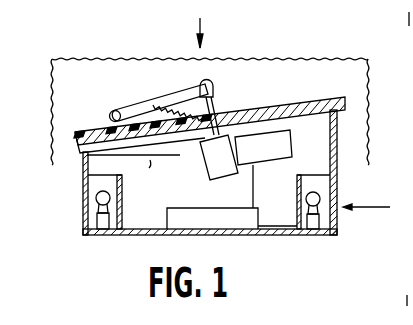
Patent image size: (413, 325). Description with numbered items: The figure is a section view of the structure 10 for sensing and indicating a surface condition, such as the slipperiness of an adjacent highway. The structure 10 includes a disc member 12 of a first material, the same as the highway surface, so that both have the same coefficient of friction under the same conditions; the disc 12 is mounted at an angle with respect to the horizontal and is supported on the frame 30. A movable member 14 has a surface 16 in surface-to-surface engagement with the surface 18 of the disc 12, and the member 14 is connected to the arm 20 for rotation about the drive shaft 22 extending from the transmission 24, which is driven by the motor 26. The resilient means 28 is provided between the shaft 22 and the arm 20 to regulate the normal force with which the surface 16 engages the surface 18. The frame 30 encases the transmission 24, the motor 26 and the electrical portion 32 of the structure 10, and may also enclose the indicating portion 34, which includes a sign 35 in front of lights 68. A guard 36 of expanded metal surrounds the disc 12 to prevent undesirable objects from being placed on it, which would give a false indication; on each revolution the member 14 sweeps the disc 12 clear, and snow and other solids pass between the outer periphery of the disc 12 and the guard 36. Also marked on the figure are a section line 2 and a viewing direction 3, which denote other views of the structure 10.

The section line 2 is at (203, 29).
The view direction 3 is at (372, 207).
The structure for sensing and indicating a surface condition 10 is at (97, 270).
The disc member 12 is at (345, 101).
The movable member 14 is at (73, 134).
The surface of the movable member 16 is at (123, 146).
The surface of the disc 18 is at (85, 131).
The arm 20 is at (157, 99).
The drive shaft 22 is at (215, 106).
The transmission 24 is at (207, 173).
The motor 26 is at (269, 132).
The resilient means 28 is at (195, 97).
The frame 30 is at (338, 158).
The electrical portion 32 is at (250, 229).
The indicating portion 34 is at (335, 193).
The sign 35 is at (84, 177).
The guard 36 is at (118, 58).
The lights 68 is at (96, 211).